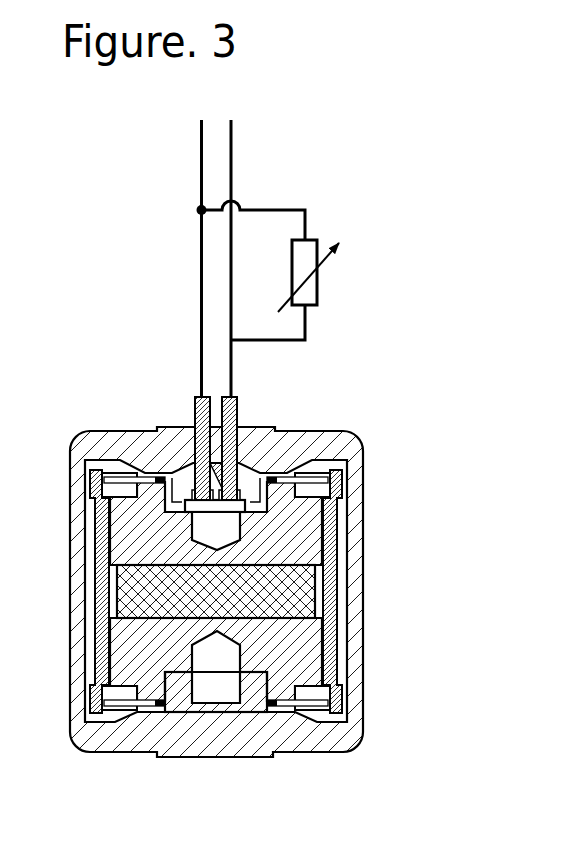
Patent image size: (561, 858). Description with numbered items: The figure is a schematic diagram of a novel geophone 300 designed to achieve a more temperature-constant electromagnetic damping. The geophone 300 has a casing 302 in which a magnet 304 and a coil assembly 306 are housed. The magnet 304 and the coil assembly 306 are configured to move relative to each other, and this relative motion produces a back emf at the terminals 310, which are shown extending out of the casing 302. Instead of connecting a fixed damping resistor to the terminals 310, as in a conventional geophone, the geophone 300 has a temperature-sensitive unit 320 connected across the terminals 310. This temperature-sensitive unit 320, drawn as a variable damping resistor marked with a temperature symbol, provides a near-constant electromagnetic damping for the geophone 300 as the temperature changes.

The geophone 300 is at (108, 124).
The casing 302 is at (352, 683).
The magnet 304 is at (282, 578).
The coil assembly 306 is at (341, 501).
The terminals 310 is at (246, 407).
The temperature-sensitive unit 320 is at (334, 224).